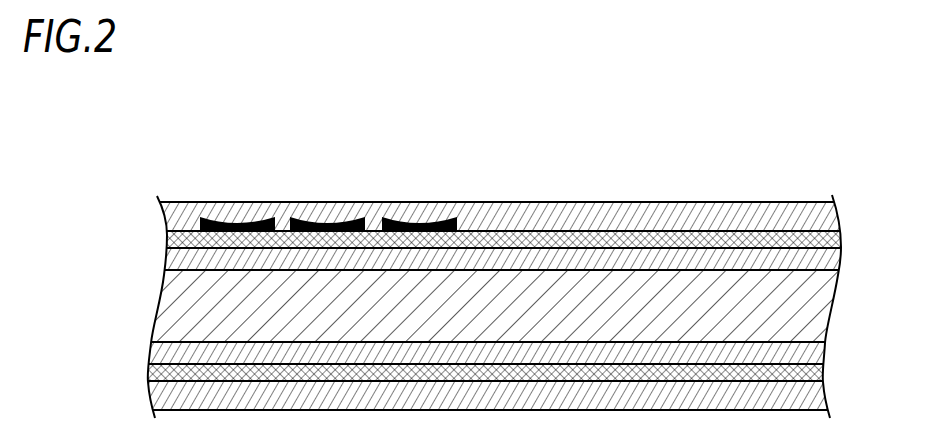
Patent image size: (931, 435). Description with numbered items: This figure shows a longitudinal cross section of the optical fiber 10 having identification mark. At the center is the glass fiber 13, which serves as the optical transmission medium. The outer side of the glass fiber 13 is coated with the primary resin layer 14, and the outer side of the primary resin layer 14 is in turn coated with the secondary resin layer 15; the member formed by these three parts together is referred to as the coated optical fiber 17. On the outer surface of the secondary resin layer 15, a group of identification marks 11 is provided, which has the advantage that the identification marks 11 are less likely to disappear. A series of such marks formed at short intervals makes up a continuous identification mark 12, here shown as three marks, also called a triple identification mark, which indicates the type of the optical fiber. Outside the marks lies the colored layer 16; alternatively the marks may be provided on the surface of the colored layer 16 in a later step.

The optical fiber having identification mark 10 is at (777, 152).
The identification mark 11 is at (330, 221).
The continuous identification mark 12 is at (458, 178).
The glass fiber 13 is at (805, 307).
The primary resin layer 14 is at (826, 256).
The secondary resin layer 15 is at (826, 239).
The colored layer 16 is at (826, 216).
The coated optical fiber 17 is at (145, 232).